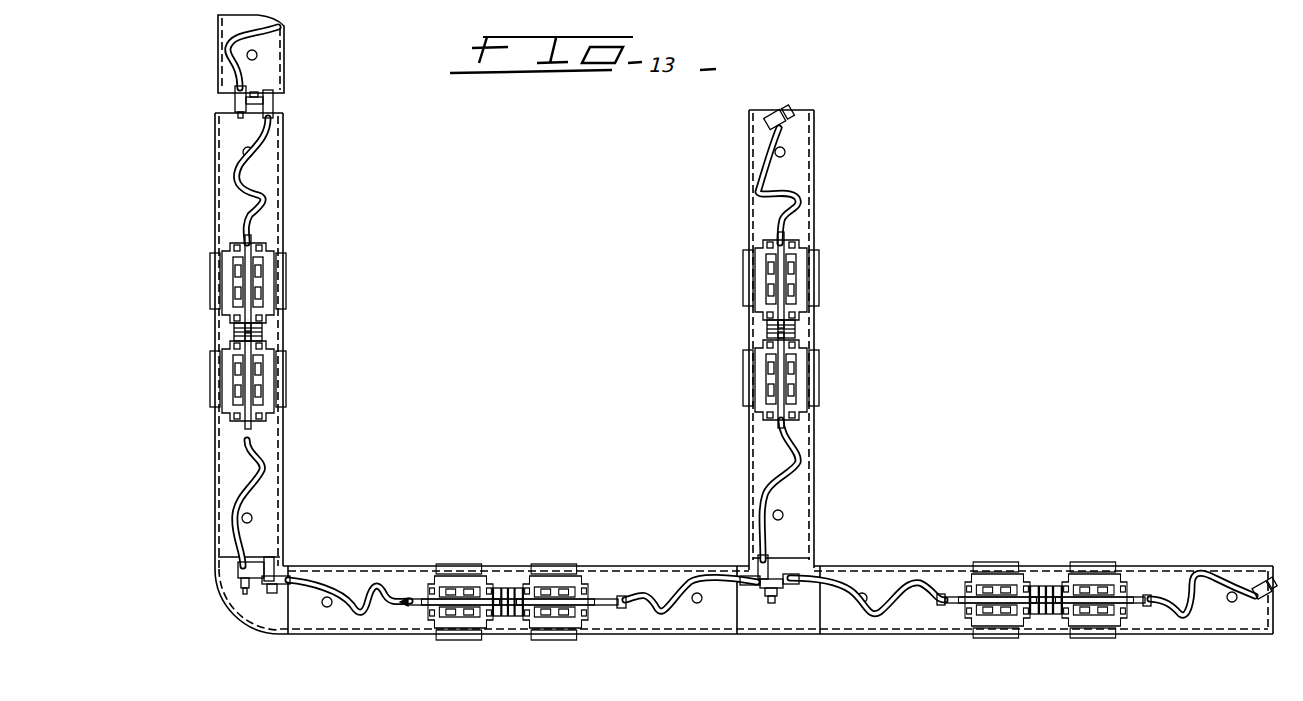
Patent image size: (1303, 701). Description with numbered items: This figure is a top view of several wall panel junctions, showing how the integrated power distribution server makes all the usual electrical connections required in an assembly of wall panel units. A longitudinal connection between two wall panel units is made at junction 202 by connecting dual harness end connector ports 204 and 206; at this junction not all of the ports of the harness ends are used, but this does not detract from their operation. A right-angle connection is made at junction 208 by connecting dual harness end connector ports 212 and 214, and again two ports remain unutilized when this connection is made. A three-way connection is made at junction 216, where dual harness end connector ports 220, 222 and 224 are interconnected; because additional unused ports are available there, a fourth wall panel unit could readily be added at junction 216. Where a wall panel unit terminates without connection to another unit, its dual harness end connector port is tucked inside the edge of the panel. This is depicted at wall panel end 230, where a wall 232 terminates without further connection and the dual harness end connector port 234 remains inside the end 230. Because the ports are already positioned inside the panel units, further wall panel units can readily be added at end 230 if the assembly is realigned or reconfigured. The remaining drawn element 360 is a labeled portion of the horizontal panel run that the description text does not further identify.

The upper corner connector assembly 202 is at (311, 98).
The end cap bracket 204 is at (237, 72).
The connector tube 206 is at (278, 108).
The lower corner connector assembly 208 is at (260, 543).
The vertical connector tube 212 is at (270, 566).
The horizontal connector fitting 214 is at (240, 569).
The tee connector assembly 216 is at (789, 548).
The vertical tube 220 is at (756, 563).
The left hose connection 222 is at (752, 578).
The right hose connection 224 is at (789, 574).
The top connector assembly 230 is at (777, 87).
The tube end 232 is at (792, 106).
The elbow fitting 234 is at (766, 116).
The right horizontal channel segment 360 is at (838, 563).